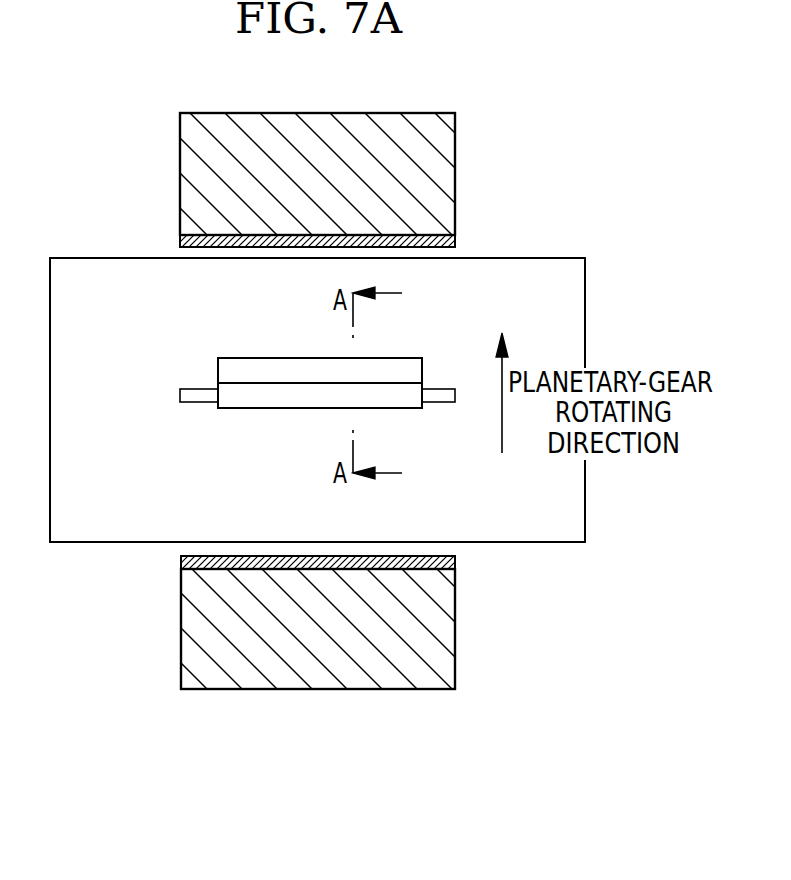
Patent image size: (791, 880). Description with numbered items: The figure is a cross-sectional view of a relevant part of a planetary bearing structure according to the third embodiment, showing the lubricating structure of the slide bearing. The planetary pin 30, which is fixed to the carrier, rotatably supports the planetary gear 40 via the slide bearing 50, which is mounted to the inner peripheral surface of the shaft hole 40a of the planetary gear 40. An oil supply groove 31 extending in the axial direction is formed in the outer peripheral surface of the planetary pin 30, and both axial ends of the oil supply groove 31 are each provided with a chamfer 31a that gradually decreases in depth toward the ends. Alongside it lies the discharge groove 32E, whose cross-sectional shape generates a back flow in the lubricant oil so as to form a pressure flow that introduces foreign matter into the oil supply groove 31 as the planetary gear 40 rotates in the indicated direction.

The planetary pin 30 is at (570, 286).
The oil supply groove 31 is at (302, 397).
The chamfer 31a is at (200, 402).
The discharge groove 32E is at (288, 368).
The planetary gear 40 is at (457, 149).
The shaft hole 40a is at (220, 556).
The slide bearing 50 is at (457, 240).